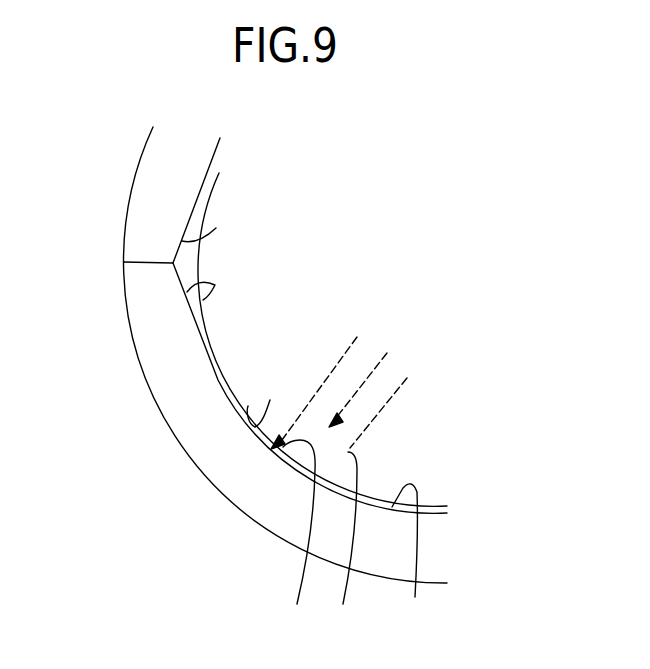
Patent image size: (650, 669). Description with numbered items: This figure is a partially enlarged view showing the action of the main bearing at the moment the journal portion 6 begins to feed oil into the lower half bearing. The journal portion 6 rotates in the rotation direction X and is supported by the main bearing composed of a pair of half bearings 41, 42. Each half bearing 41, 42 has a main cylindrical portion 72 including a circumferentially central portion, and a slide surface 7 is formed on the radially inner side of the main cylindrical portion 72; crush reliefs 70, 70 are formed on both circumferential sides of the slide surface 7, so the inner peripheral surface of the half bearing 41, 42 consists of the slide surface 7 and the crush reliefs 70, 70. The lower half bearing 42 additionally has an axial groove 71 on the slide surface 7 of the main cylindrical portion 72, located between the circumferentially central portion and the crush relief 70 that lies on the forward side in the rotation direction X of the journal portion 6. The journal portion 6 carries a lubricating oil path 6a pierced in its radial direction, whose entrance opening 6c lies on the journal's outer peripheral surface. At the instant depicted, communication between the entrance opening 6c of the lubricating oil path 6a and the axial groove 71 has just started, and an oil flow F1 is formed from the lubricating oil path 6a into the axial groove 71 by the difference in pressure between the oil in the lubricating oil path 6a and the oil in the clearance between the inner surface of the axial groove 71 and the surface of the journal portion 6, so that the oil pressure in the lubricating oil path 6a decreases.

The journal portion 6 is at (375, 243).
The lubricating oil path 6a is at (342, 540).
The entrance opening 6c is at (297, 467).
The slide surface 7 is at (406, 556).
The half bearing 41 is at (143, 154).
The half bearing 42 is at (287, 543).
The crush relief 70 is at (216, 228).
The axial groove 71 is at (270, 400).
The main cylindrical portion 72 is at (245, 490).
The oil flow F1 is at (299, 535).
The rotation direction X is at (387, 437).